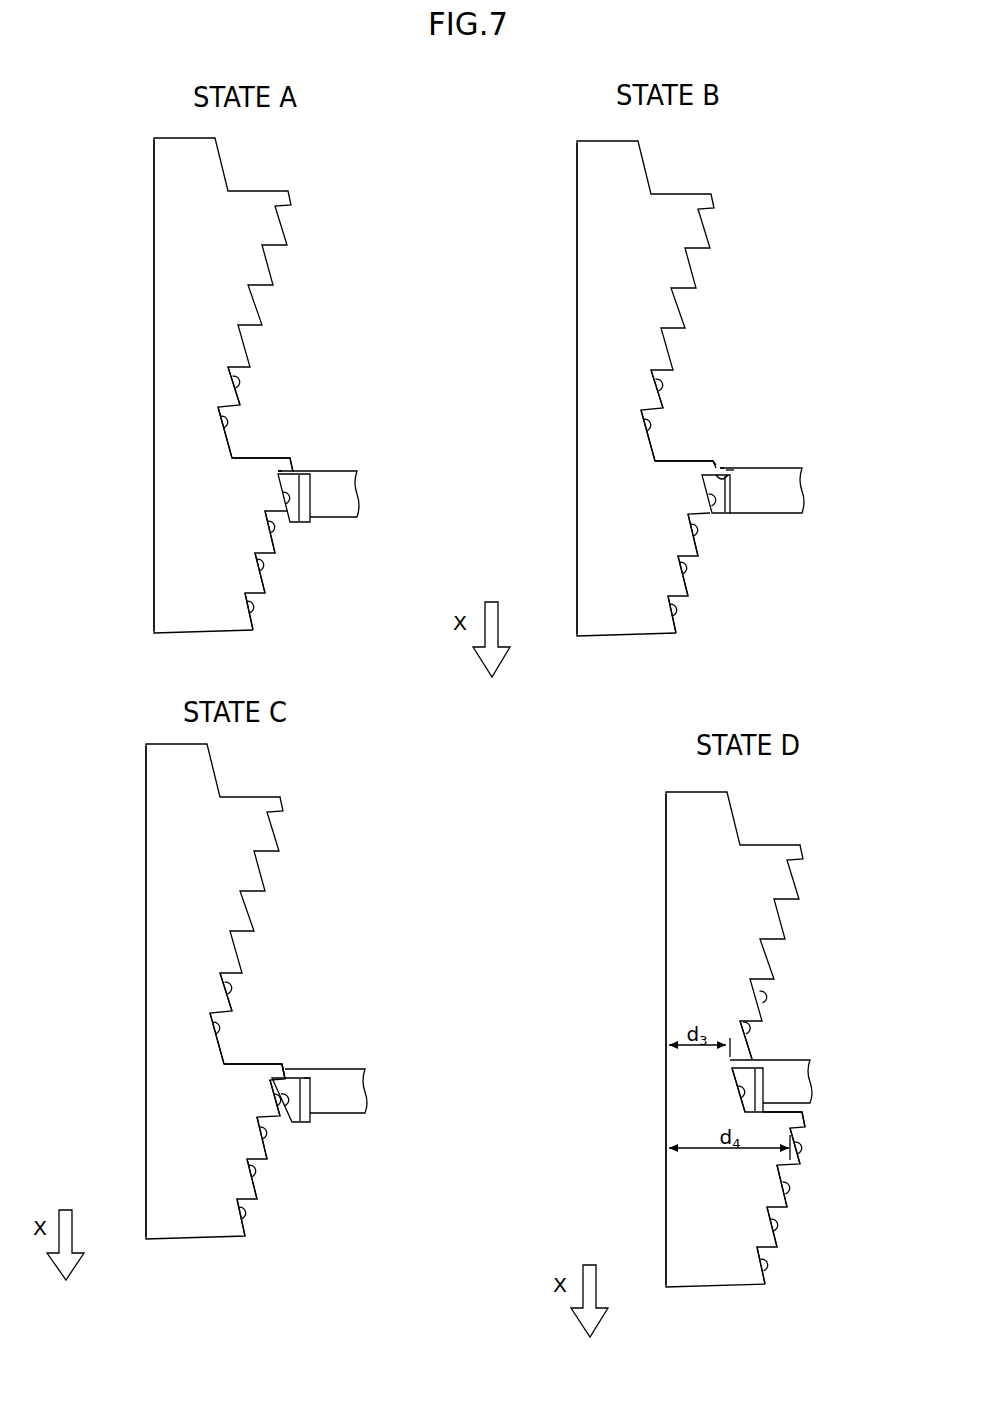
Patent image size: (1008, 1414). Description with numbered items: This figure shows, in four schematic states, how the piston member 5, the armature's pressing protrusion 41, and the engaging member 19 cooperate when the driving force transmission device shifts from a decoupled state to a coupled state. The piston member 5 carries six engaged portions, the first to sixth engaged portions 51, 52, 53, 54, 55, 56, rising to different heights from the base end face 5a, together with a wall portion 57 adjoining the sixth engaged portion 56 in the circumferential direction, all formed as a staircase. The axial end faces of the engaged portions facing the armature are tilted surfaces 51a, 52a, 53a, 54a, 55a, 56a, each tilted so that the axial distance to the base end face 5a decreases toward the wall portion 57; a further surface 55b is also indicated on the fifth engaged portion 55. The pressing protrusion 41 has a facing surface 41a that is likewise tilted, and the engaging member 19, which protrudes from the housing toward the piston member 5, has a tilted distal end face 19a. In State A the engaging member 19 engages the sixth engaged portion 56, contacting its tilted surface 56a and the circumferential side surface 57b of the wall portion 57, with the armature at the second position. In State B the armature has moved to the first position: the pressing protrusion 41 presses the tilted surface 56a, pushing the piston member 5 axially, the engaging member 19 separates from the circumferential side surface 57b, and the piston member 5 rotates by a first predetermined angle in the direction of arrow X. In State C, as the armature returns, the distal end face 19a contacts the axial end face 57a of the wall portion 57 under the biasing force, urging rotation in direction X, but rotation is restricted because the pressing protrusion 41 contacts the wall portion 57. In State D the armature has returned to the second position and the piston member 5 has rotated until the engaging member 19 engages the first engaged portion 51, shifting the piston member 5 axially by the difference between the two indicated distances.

The piston member 5 is at (307, 198).
The base end face 5a is at (154, 293).
The engaging member 19 is at (342, 495).
The distal end face 19a is at (278, 474).
The pressing protrusion 41 is at (298, 503).
The facing surface 41a is at (281, 489).
The first engaged portion 51 is at (260, 417).
The tilted surface 51a is at (221, 417).
The second engaged portion 52 is at (257, 385).
The tilted surface 52a is at (233, 377).
The third engaged portion 53 is at (260, 608).
The tilted surface 53a is at (251, 610).
The fourth engaged portion 54 is at (280, 572).
The tilted surface 54a is at (262, 568).
The fifth engaged portion 55 is at (295, 532).
The tilted surface 55a is at (272, 530).
The surface of fifth tooth 55b is at (730, 472).
The sixth engaged portion 56 is at (307, 465).
The tilted surface 56a is at (273, 507).
The wall portion 57 is at (293, 445).
The axial end face 57a is at (285, 1067).
The circumferential side surface 57b is at (310, 1078).